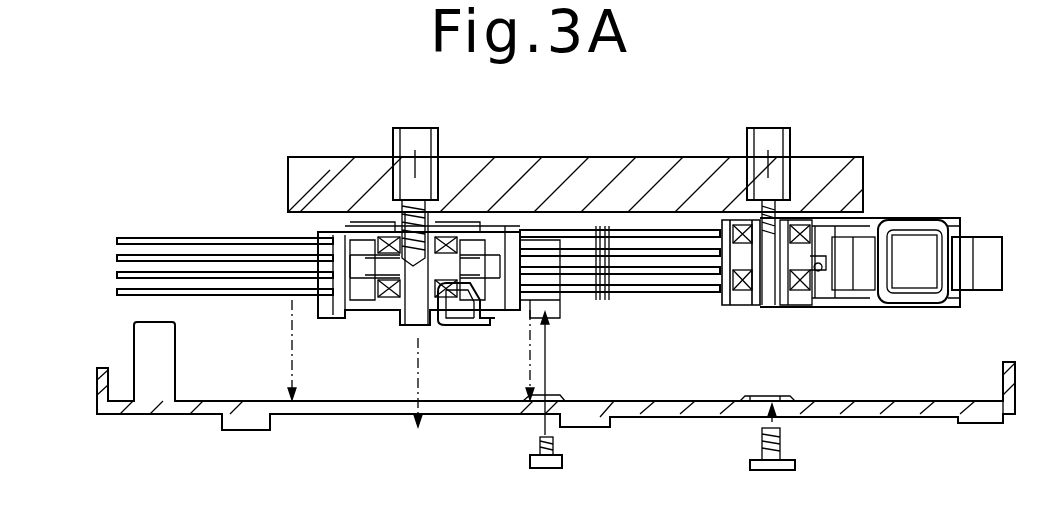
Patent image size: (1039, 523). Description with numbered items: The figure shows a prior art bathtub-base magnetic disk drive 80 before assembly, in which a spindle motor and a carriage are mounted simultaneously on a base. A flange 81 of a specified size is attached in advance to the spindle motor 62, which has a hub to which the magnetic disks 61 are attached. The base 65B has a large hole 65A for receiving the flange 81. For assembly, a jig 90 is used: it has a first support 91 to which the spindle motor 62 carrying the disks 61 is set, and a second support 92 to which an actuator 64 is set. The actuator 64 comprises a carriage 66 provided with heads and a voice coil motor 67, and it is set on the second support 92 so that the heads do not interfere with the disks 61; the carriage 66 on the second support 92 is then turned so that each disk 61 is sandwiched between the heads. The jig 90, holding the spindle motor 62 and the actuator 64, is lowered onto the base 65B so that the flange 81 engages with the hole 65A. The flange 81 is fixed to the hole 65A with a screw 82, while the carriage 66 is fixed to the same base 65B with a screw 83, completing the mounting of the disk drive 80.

The magnetic disks 61 is at (190, 238).
The spindle motor 62 is at (465, 318).
The actuator 64 is at (872, 318).
The hole 65A is at (360, 415).
The base 65B is at (1015, 385).
The carriage 66 is at (795, 310).
The voice coil motor 67 is at (988, 272).
The magnetic disk drive 80 is at (958, 172).
The flange 81 is at (362, 318).
The screw 82 is at (565, 463).
The screw 83 is at (795, 465).
The jig 90 is at (503, 146).
The first support 91 is at (395, 143).
The second support 92 is at (775, 140).